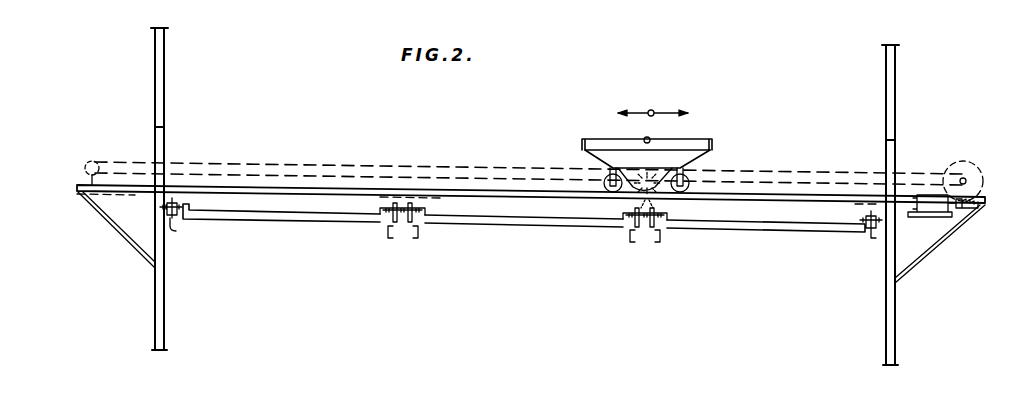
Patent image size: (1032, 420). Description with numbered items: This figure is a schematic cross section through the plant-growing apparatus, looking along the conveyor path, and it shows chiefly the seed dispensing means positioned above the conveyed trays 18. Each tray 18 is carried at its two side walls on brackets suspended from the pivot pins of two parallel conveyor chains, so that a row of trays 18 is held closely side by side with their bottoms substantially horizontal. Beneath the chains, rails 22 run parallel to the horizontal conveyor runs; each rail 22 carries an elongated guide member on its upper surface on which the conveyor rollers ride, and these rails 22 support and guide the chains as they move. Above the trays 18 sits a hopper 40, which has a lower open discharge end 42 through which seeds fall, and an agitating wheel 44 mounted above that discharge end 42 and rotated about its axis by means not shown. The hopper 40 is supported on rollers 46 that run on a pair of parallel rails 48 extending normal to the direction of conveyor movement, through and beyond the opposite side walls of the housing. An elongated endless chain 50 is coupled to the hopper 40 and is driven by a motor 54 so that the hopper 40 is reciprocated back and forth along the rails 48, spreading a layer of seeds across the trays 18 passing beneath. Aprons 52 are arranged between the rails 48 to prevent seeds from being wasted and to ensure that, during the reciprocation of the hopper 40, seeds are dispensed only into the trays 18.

The tray 18 is at (290, 223).
The rail 22 is at (173, 229).
The hopper 40 is at (593, 139).
The lower open discharge end 42 is at (642, 196).
The agitating wheel 44 is at (657, 167).
The rollers 46 is at (690, 184).
The rails 48 is at (283, 188).
The endless chain 50 is at (200, 161).
The aprons 52 is at (122, 197).
The motor 54 is at (926, 216).